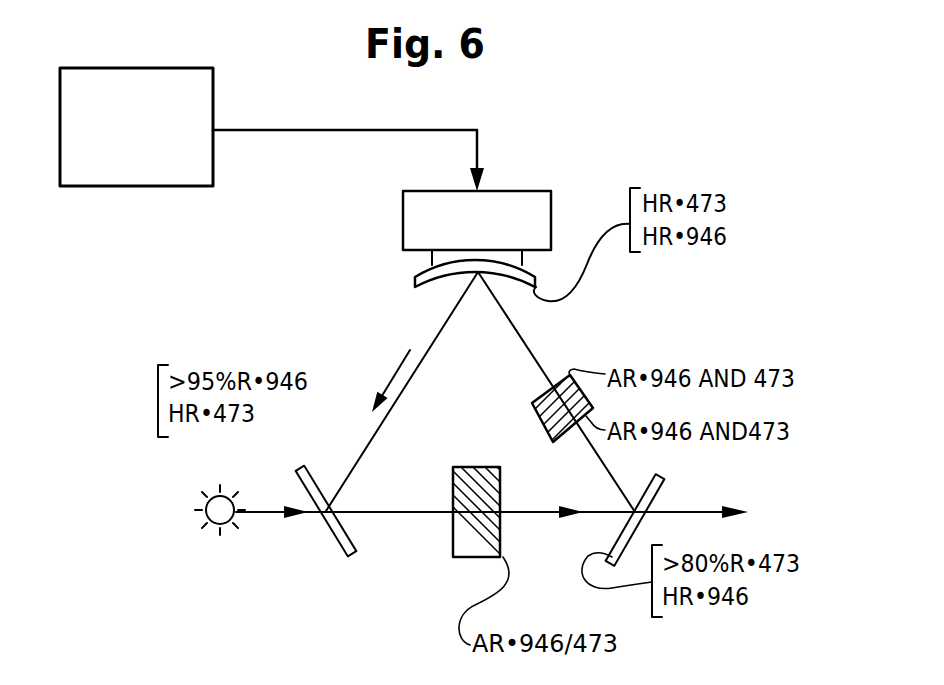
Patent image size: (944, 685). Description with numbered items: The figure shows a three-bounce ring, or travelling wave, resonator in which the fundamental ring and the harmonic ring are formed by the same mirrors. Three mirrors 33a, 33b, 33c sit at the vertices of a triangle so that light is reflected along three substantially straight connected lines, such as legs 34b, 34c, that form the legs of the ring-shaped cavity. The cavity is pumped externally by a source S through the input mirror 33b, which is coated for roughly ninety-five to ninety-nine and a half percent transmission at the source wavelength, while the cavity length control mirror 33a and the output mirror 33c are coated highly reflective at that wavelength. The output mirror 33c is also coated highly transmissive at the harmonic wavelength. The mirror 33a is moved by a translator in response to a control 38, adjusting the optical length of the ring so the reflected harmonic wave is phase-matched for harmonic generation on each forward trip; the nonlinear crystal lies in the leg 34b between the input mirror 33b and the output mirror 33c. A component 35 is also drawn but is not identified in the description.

The control 38 is at (153, 187).
The pump source (laser diode) 35 is at (551, 201).
The cavity length control mirror 33a is at (413, 291).
The input mirror 33b is at (338, 541).
The output mirror 33c is at (647, 492).
The leg of ring-shaped cavity 34b is at (387, 512).
The leg of ring-shaped cavity 34c is at (528, 368).
The source S is at (212, 530).